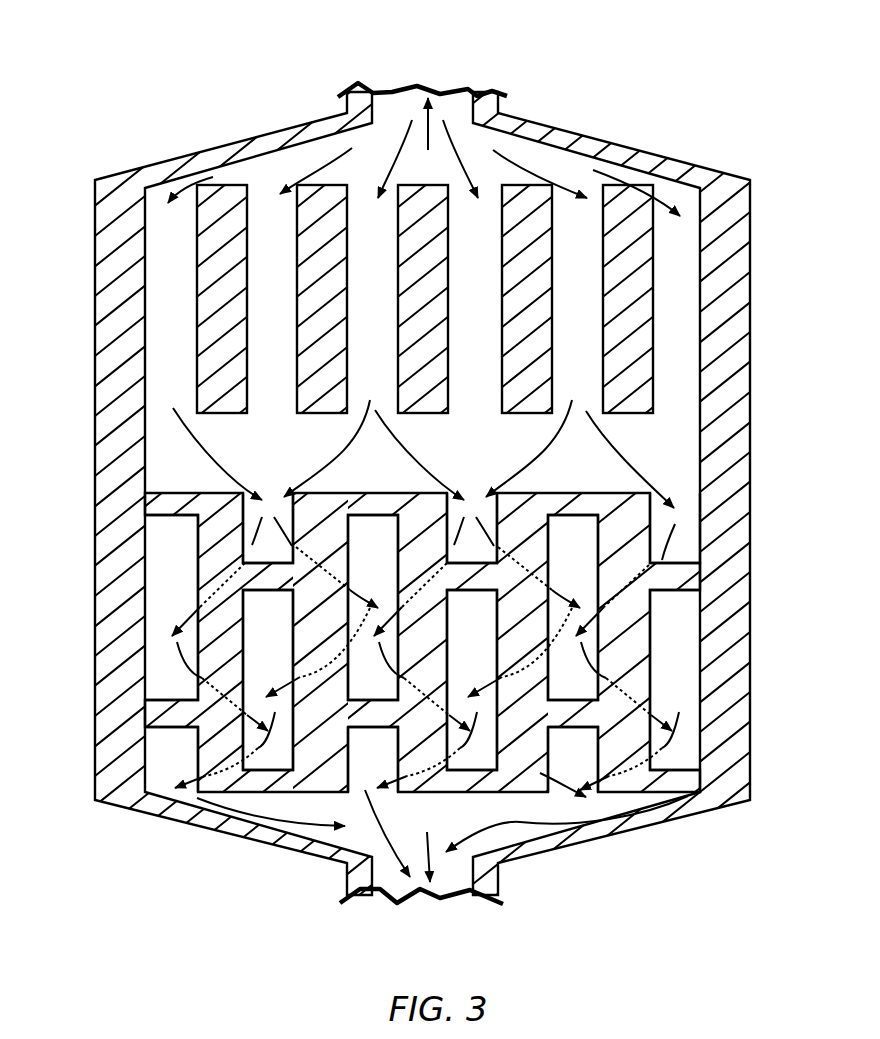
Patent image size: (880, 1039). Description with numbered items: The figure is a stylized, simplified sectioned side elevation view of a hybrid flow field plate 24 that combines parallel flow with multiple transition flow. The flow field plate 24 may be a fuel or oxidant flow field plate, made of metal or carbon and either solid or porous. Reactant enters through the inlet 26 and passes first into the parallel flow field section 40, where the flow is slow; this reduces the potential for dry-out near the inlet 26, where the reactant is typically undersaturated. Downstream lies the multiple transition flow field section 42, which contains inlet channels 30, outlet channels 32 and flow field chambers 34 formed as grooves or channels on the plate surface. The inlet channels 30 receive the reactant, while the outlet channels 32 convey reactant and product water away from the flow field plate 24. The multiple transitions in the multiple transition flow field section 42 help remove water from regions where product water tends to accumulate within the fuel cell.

The flow field plate 24 is at (624, 112).
The inlet 26 is at (428, 490).
The inlet channels 30 is at (471, 528).
The outlet channels 32 is at (371, 759).
The flow field chambers 34 is at (422, 642).
The parallel flow field section 40 is at (768, 180).
The multiple transition flow field section 42 is at (768, 480).